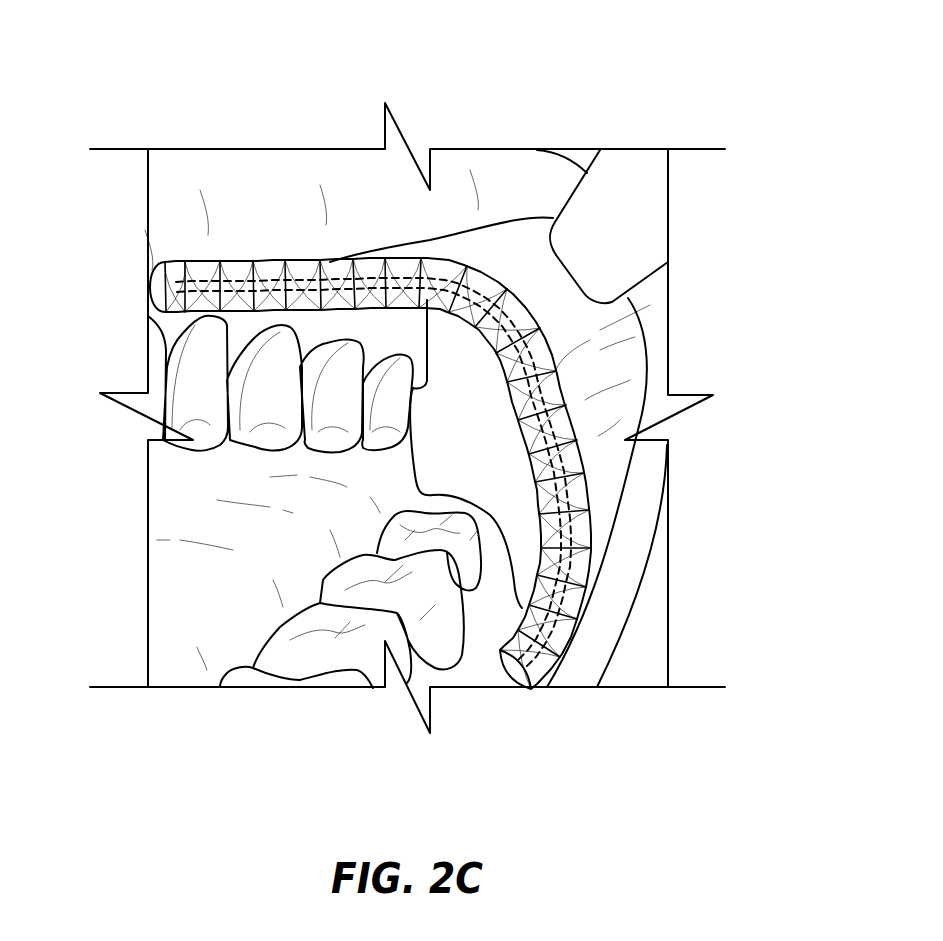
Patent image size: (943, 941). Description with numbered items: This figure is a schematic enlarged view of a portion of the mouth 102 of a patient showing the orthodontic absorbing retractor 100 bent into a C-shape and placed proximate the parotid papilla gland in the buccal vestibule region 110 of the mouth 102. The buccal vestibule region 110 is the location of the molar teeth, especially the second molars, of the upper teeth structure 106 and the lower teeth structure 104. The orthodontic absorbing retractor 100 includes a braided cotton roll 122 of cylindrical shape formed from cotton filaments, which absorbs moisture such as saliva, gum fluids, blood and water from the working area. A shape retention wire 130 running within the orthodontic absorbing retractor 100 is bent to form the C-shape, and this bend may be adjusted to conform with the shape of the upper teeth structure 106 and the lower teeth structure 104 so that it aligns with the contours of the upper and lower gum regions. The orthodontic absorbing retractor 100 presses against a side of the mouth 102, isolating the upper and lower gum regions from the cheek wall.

The orthodontic absorbing retractor 100 is at (265, 234).
The mouth 102 is at (694, 51).
The lower teeth structure 104 is at (312, 658).
The upper teeth structure 106 is at (192, 352).
The buccal vestibule region 110 is at (581, 382).
The braided cotton roll 122 is at (228, 267).
The shape retention wire 130 is at (343, 267).